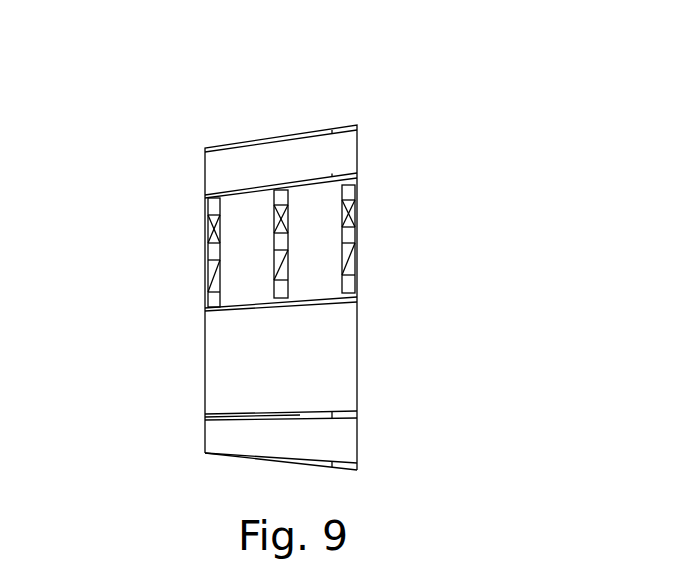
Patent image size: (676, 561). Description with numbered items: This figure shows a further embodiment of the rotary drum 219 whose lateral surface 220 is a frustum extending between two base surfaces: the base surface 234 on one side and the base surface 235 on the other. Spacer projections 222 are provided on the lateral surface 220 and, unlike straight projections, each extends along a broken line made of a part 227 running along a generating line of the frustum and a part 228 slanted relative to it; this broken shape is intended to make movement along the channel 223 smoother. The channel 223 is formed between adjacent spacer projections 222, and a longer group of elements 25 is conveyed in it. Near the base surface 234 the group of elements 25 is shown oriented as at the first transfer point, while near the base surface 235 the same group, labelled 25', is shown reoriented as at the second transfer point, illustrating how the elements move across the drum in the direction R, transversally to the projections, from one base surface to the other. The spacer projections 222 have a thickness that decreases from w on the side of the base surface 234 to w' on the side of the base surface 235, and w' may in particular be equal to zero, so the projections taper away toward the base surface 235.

The rotary drum 219 is at (316, 106).
The lateral surface 220 is at (268, 150).
The base surface 235 is at (180, 159).
The base surface 234 is at (384, 151).
The group of elements 25 is at (346, 240).
The group of elements 25' is at (217, 250).
The channel 223 is at (338, 385).
The slanted part of spacer projection 228 is at (205, 415).
The generating-line part of spacer projection 227 is at (357, 419).
The spacer projections 222 is at (227, 436).